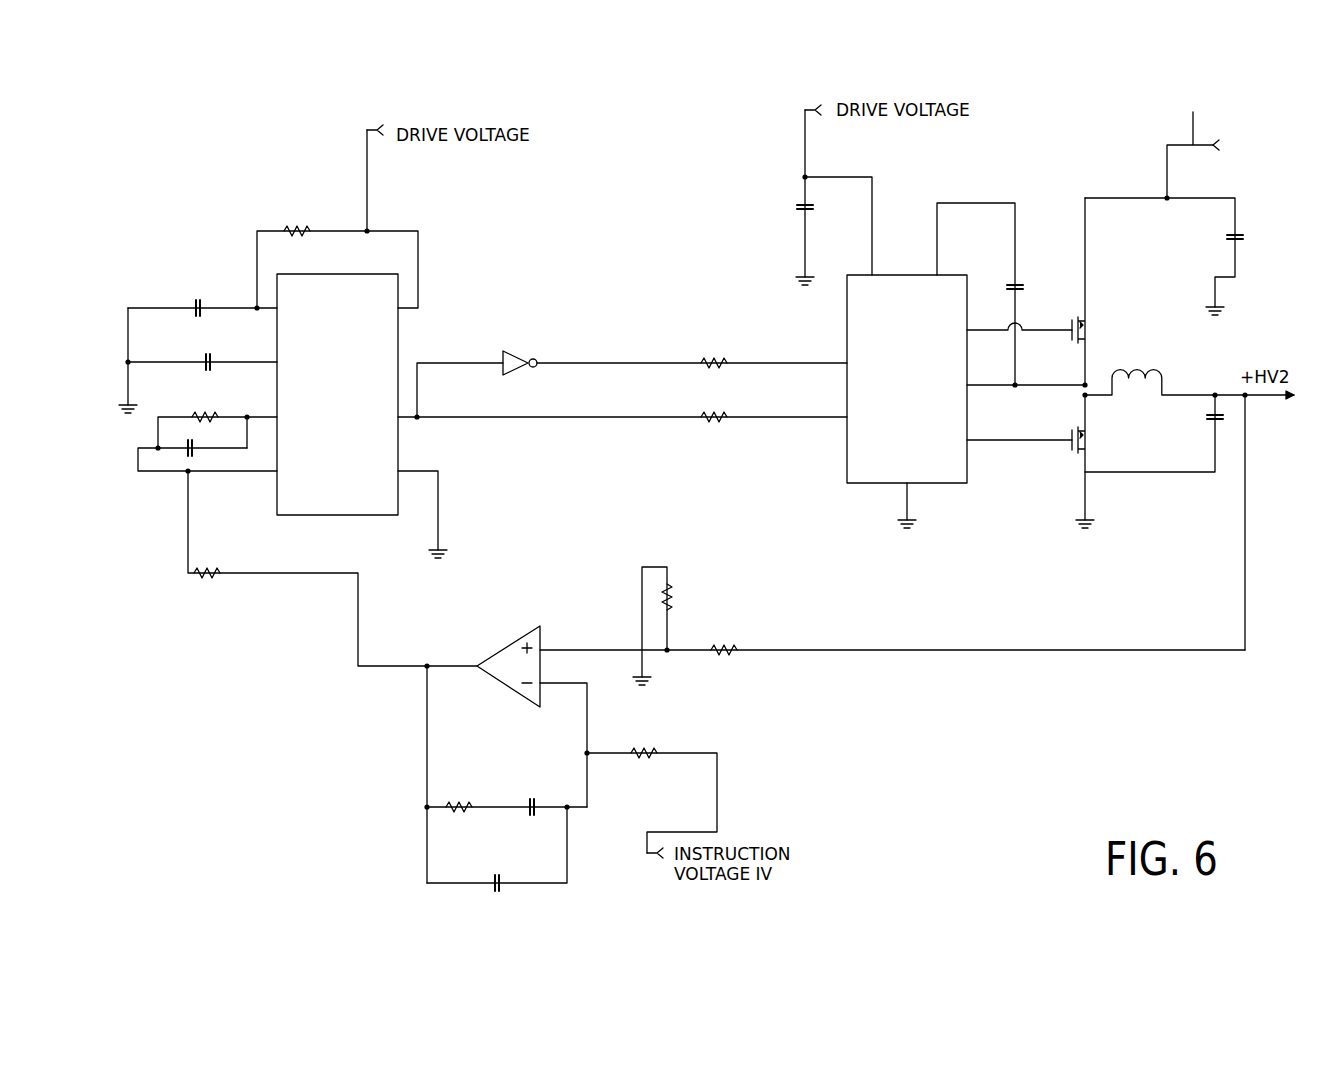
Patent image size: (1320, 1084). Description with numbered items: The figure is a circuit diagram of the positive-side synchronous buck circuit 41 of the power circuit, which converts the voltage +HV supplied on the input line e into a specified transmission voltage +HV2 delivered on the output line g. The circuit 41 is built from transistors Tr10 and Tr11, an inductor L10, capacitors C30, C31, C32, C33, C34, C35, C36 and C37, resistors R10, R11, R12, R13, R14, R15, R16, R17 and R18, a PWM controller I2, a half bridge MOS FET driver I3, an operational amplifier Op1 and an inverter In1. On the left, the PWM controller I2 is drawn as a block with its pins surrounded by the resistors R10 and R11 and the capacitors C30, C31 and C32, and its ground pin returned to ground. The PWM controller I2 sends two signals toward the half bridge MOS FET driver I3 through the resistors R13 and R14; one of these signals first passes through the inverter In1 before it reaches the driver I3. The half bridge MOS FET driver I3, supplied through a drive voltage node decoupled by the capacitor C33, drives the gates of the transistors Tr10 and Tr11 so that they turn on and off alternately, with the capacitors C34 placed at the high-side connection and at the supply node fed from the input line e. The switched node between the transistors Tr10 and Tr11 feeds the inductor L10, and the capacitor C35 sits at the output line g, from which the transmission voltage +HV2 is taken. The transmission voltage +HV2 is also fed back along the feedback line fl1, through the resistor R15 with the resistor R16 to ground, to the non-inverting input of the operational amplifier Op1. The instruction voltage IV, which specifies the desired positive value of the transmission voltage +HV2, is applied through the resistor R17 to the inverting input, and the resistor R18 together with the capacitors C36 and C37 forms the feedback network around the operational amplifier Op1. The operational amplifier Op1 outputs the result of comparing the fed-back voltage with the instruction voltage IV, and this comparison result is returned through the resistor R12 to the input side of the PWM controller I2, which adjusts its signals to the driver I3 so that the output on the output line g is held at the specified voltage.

The positive-side synchronous buck circuit 41 is at (684, 134).
The PWM controller I2 is at (327, 273).
The half bridge MOS FET driver I3 is at (903, 270).
The resistor R10 is at (283, 228).
The resistor R11 is at (246, 398).
The resistor R12 is at (216, 580).
The resistor R13 is at (722, 358).
The resistor R14 is at (722, 424).
The resistor R15 is at (740, 648).
The resistor R16 is at (669, 590).
The resistor R17 is at (658, 750).
The resistor R18 is at (472, 800).
The capacitor C30 is at (207, 298).
The capacitor C31 is at (206, 371).
The capacitor C32 is at (188, 462).
The capacitor C33 is at (800, 210).
The capacitor C34 is at (1010, 281).
The capacitor C35 is at (1208, 425).
The capacitor C36 is at (540, 800).
The capacitor C37 is at (499, 875).
The inverter In1 is at (513, 350).
The transistor Tr10 is at (1071, 308).
The transistor Tr11 is at (1069, 440).
The inductor L10 is at (1145, 366).
The operational amplifier Op1 is at (507, 635).
The feedback line fl1 is at (946, 655).
The input line e is at (1212, 143).
The output line g is at (1265, 400).